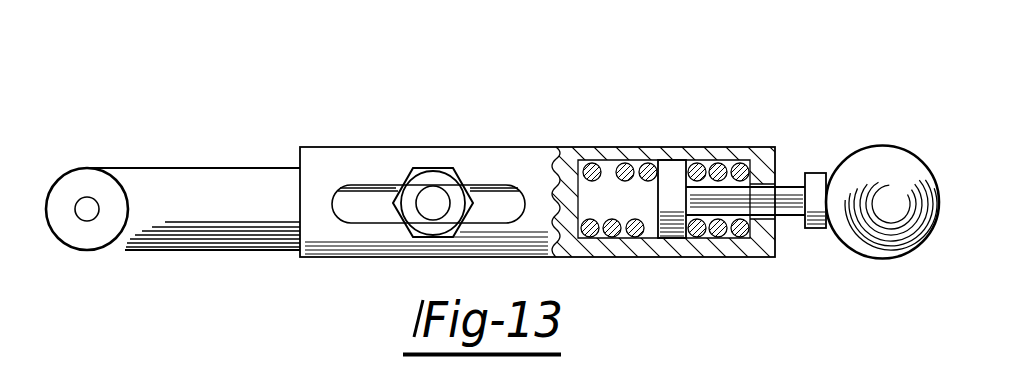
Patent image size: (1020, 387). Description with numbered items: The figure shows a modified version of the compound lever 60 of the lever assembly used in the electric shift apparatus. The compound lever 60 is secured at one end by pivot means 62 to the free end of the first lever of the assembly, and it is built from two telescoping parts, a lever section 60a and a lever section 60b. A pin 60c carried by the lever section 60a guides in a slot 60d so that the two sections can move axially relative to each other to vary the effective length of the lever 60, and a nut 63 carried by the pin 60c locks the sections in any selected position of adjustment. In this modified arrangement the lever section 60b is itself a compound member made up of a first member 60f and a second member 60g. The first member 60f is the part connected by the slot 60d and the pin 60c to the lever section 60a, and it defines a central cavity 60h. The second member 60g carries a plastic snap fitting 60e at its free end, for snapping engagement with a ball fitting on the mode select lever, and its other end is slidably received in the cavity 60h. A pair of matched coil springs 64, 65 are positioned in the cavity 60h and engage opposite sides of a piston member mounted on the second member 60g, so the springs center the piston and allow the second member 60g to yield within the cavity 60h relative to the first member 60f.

The compound lever 60 is at (435, 112).
The lever section 60a is at (226, 168).
The lever section 60b is at (788, 99).
The pin 60c is at (430, 221).
The slot 60d is at (363, 197).
The plastic snap fitting 60e is at (873, 258).
The first member 60f is at (668, 159).
The second member 60g is at (790, 185).
The central cavity 60h is at (642, 205).
The pivot means 62 is at (87, 197).
The nut 63 is at (457, 179).
The coil spring 64 is at (624, 163).
The coil spring 65 is at (720, 162).